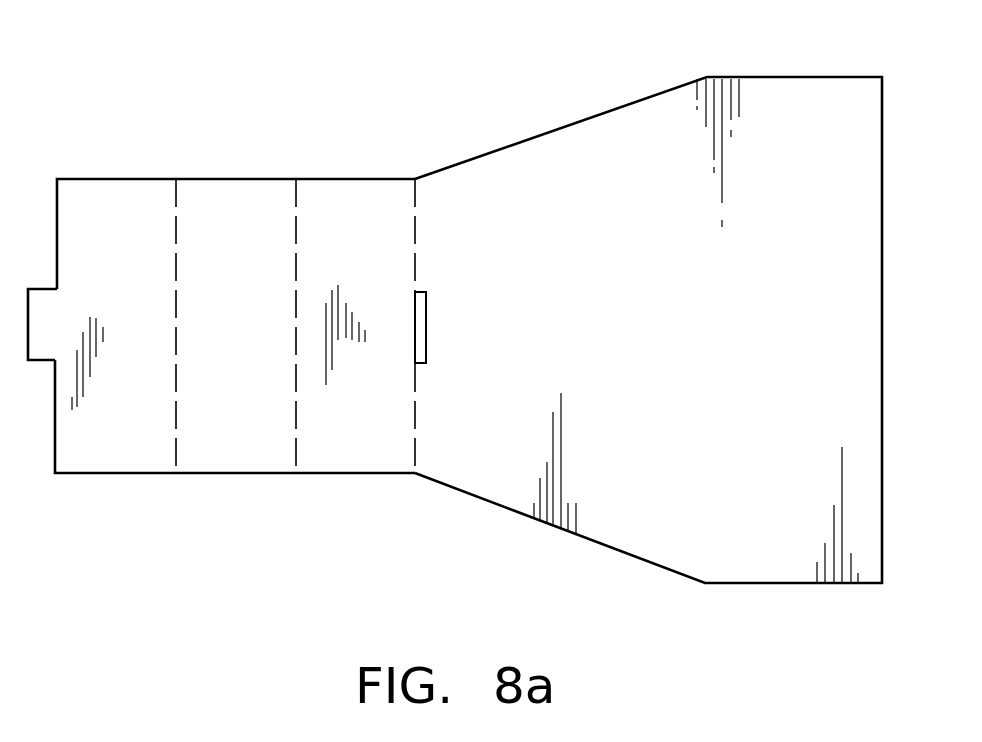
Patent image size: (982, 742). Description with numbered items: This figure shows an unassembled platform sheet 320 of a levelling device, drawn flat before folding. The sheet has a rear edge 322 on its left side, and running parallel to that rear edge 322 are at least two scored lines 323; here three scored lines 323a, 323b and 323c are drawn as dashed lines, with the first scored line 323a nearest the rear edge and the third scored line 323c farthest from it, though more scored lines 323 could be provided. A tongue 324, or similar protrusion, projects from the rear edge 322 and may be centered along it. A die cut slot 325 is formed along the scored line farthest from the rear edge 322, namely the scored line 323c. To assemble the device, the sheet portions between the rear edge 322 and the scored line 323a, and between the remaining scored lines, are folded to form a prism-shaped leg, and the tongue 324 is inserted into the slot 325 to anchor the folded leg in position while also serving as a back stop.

The platform sheet 320 is at (806, 180).
The rear edge 322 is at (57, 207).
The scored lines 323 is at (292, 333).
The first scored line 323a is at (176, 440).
The second scored line 323b is at (296, 440).
The third scored line 323c is at (415, 428).
The tongue 324 is at (40, 357).
The die cut slot 325 is at (428, 333).